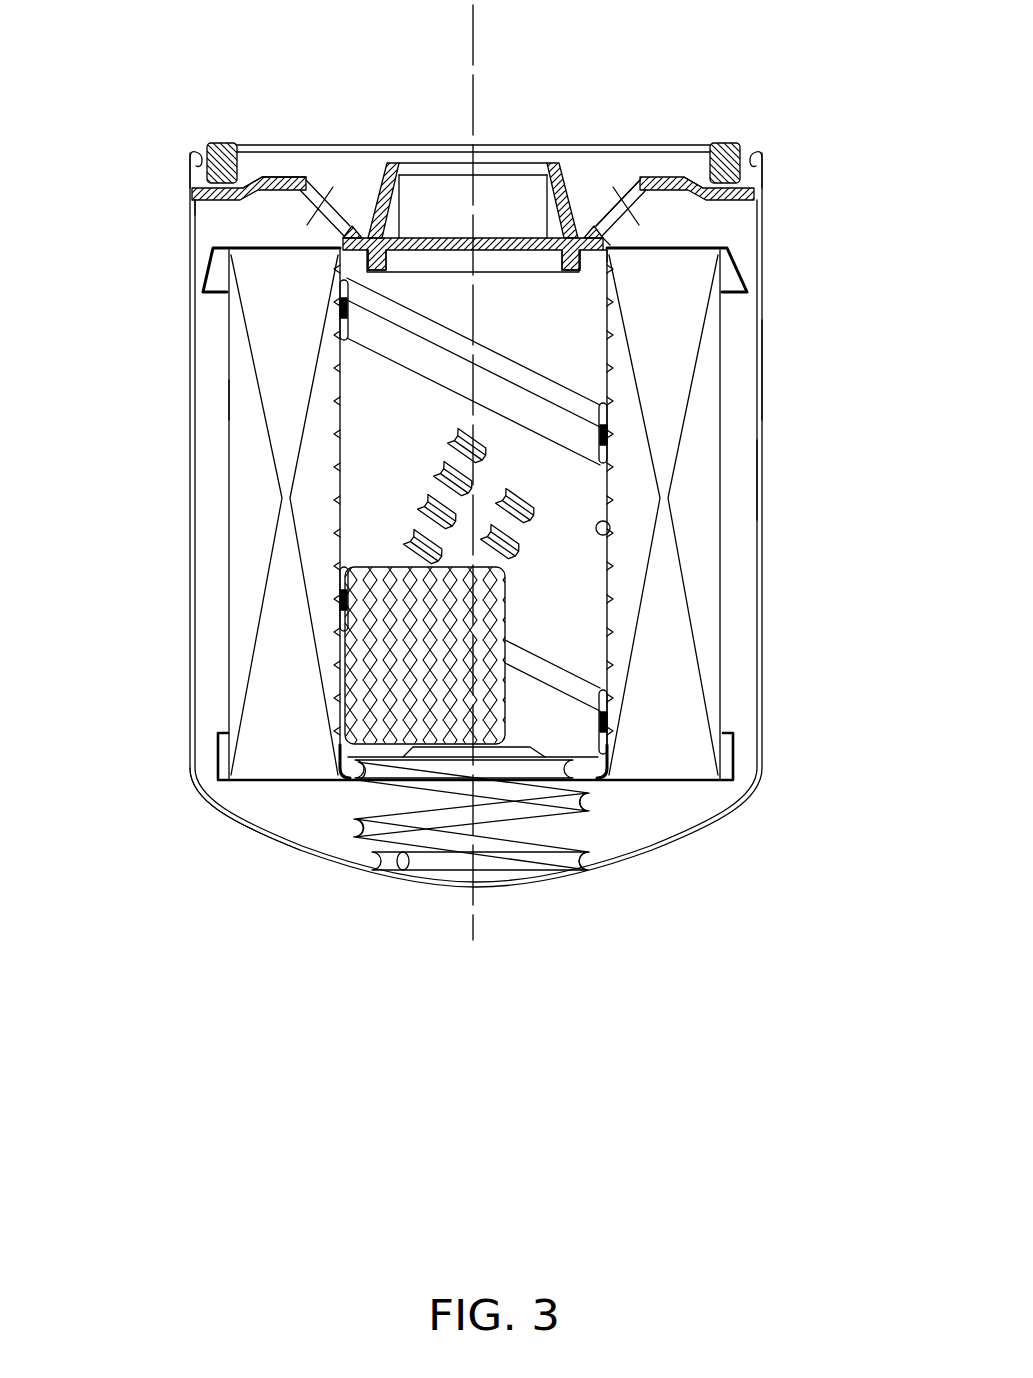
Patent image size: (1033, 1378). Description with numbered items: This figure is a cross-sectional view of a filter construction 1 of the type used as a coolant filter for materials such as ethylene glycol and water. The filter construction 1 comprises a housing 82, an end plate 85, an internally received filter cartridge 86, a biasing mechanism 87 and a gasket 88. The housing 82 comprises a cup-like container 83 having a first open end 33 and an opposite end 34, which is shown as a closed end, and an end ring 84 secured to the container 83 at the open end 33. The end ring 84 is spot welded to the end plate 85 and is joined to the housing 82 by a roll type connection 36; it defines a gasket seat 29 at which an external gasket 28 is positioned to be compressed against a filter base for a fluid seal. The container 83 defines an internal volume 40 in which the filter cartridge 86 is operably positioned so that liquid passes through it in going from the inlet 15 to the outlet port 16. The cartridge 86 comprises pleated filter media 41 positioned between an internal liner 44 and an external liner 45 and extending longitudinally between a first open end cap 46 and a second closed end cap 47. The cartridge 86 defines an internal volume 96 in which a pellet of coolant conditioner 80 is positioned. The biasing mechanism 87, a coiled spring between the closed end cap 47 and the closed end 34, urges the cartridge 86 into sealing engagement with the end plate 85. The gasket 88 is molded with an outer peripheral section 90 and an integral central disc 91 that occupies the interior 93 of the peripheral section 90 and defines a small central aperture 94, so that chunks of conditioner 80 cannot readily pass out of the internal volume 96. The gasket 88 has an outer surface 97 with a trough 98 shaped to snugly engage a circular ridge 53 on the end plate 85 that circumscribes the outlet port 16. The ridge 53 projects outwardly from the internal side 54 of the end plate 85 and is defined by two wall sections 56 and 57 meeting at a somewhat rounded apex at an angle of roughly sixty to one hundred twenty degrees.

The filter construction 1 is at (800, 226).
The inlet 15 is at (304, 178).
The outlet port 16 is at (528, 170).
The external gasket 28 is at (725, 148).
The gasket seat 29 is at (752, 152).
The first open end 33 is at (255, 148).
The opposite end 34 is at (246, 835).
The roll type connection 36 is at (175, 158).
The internal volume 40 is at (759, 650).
The filter media 41 is at (241, 582).
The internal liner 44 is at (341, 445).
The external liner 45 is at (228, 399).
The first open end cap 46 is at (745, 266).
The second closed end cap 47 is at (662, 782).
The ridge 53 is at (597, 200).
The internal side 54 is at (210, 203).
The wall section 56 is at (574, 210).
The wall section 57 is at (612, 249).
The coolant conditioner pellet 80 is at (505, 622).
The housing 82 is at (760, 356).
The container 83 is at (758, 482).
The end ring 84 is at (668, 178).
The end plate 85 is at (265, 178).
The filter cartridge 86 is at (214, 484).
The biasing mechanism 87 is at (592, 866).
The gasket 88 is at (340, 237).
The outer peripheral section 90 is at (612, 246).
The central disc 91 is at (486, 175).
The interior 93 is at (385, 258).
The central aperture 94 is at (487, 236).
The internal volume 96 is at (612, 539).
The outer surface 97 is at (385, 234).
The trough 98 is at (338, 190).